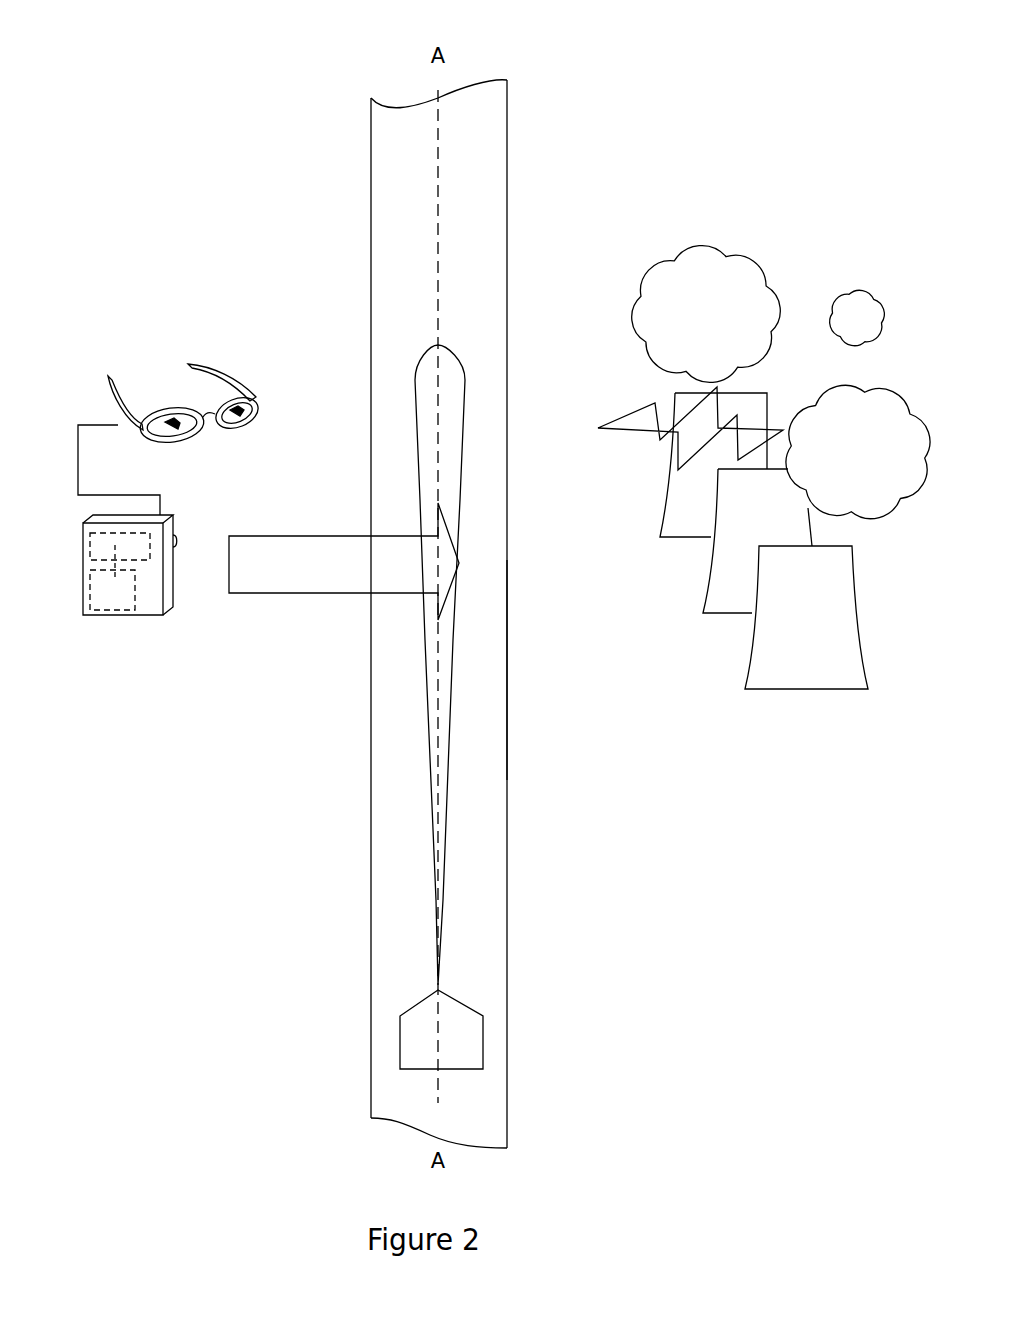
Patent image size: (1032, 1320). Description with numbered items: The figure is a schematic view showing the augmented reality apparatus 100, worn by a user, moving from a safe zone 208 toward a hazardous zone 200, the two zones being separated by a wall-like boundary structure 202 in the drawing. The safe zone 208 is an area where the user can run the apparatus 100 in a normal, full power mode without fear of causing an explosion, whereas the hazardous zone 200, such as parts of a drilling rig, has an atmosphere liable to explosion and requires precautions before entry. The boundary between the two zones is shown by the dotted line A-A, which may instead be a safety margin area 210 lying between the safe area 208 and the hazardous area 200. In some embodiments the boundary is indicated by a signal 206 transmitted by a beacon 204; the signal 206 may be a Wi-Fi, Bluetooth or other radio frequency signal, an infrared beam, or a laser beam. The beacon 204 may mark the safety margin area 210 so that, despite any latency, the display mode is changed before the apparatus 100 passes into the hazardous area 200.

The augmented reality apparatus 100 is at (80, 384).
The hazardous zone 200 is at (602, 240).
The wall 202 is at (438, 198).
The beacon 204 is at (483, 1050).
The signal 206 is at (430, 762).
The safe zone 208 is at (258, 240).
The safety margin area 210 is at (507, 667).